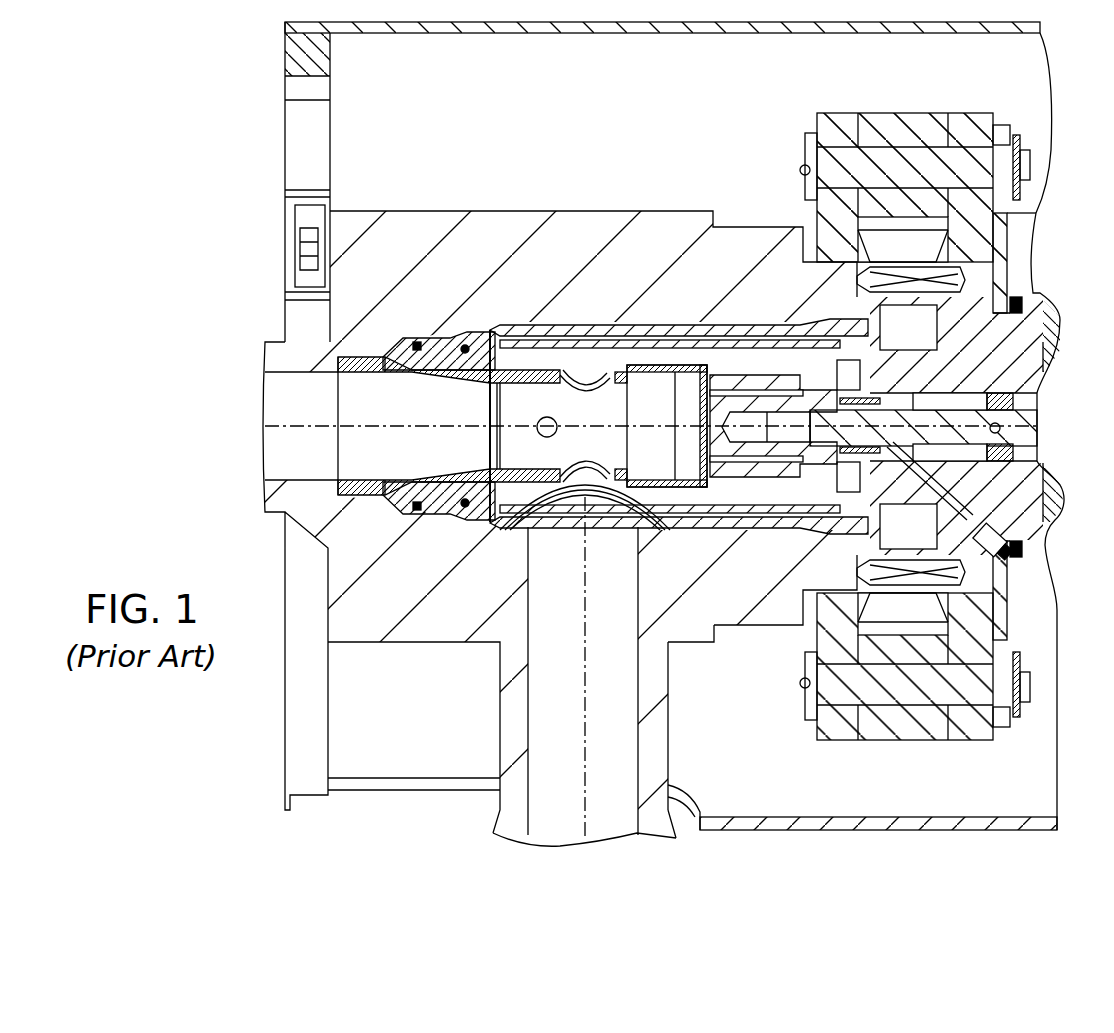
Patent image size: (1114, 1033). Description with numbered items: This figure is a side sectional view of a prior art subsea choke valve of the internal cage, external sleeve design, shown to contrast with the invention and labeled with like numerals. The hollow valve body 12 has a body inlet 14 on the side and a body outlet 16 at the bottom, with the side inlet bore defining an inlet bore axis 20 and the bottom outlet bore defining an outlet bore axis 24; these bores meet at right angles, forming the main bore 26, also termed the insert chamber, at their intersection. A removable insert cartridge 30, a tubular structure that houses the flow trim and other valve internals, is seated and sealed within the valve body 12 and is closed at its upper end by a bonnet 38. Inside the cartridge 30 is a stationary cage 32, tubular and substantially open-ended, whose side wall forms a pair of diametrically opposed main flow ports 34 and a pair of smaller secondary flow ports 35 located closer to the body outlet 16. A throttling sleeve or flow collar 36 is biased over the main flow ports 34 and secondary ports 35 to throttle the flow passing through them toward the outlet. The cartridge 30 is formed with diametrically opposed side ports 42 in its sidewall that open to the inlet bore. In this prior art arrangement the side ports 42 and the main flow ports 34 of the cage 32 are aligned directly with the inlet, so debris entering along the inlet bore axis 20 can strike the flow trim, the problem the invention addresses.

The hollow valve body 12 is at (487, 212).
The body inlet 14 is at (613, 792).
The body outlet 16 is at (275, 458).
The inlet bore axis 20 is at (585, 732).
The outlet bore axis 24 is at (297, 427).
The main bore 26 is at (573, 360).
The insert cartridge 30 is at (633, 345).
The stationary cage 32 is at (548, 370).
The main flow ports 34 is at (593, 390).
The secondary flow ports 35 is at (552, 417).
The throttling sleeve 36 is at (663, 358).
The bonnet 38 is at (980, 363).
The side ports 42 is at (612, 503).